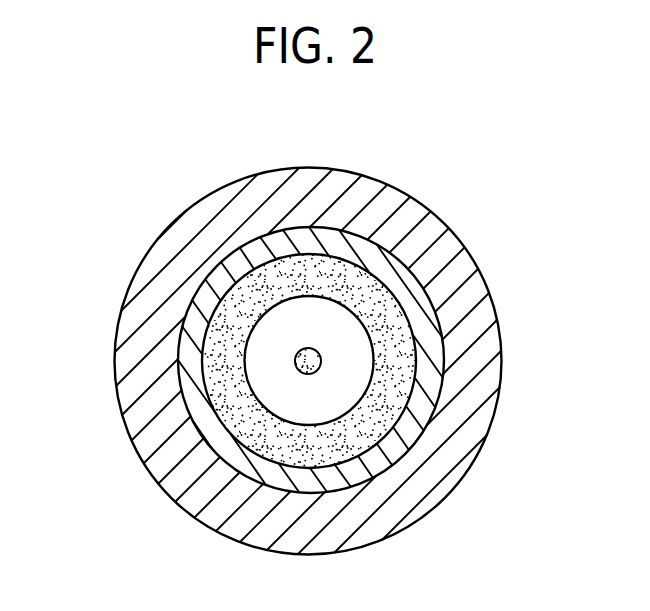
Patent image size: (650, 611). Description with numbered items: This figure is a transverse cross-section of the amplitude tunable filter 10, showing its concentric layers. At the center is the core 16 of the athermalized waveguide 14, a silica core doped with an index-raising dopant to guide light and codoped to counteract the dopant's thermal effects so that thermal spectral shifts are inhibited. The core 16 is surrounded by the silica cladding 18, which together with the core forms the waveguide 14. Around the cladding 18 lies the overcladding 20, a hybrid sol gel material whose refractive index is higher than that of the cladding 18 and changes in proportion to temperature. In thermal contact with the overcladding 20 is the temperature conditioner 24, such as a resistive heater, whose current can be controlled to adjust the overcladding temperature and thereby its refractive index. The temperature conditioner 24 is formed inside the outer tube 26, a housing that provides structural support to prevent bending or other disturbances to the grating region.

The amplitude tunable filter 10 is at (80, 222).
The athermalized waveguide 14 is at (378, 330).
The core 16 is at (321, 361).
The cladding 18 is at (323, 390).
The overcladding 20 is at (202, 328).
The temperature conditioner 24 is at (300, 239).
The tube 26 is at (197, 493).